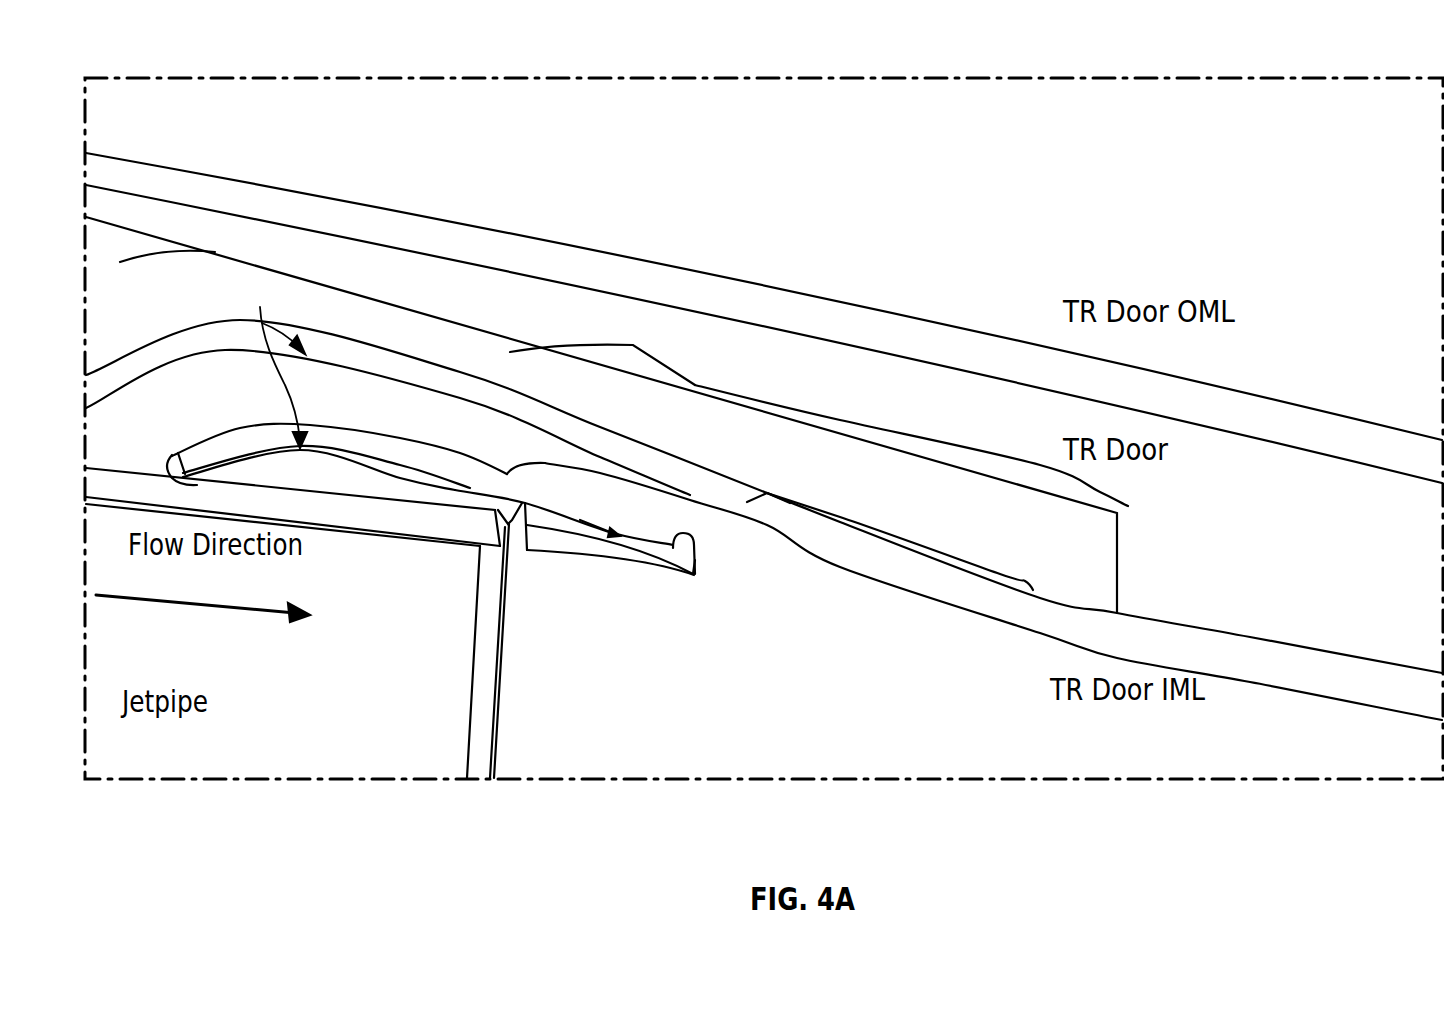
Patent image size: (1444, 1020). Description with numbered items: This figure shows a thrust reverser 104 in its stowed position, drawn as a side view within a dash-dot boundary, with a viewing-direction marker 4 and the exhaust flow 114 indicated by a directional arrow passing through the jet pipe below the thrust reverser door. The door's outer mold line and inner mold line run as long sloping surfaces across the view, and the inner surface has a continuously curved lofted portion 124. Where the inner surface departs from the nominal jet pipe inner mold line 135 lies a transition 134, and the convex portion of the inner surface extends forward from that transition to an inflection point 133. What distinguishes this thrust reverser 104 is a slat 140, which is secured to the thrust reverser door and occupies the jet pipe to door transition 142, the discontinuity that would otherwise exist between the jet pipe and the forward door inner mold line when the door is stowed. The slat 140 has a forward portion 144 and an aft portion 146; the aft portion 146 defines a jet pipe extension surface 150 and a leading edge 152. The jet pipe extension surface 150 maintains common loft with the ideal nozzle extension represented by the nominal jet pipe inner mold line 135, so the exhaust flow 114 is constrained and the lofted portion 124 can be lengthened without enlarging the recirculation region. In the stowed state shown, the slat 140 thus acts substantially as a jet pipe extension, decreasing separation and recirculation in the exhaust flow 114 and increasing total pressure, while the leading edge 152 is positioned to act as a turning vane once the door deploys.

The viewing direction of FIG. 4 is at (279, 361).
The thrust reverser 104 is at (1360, 54).
The exhaust flow 114 is at (220, 610).
The lofted portion 124 is at (819, 407).
The inflection point 133 is at (880, 580).
The transition 134 is at (1228, 682).
The nominal jet pipe inner mold line 135 is at (960, 610).
The slat 140 is at (478, 467).
The jet pipe to door transition 142 is at (767, 493).
The forward portion 144 is at (228, 443).
The aft portion 146 is at (690, 536).
The jet pipe extension surface 150 is at (596, 568).
The leading edge 152 is at (706, 579).